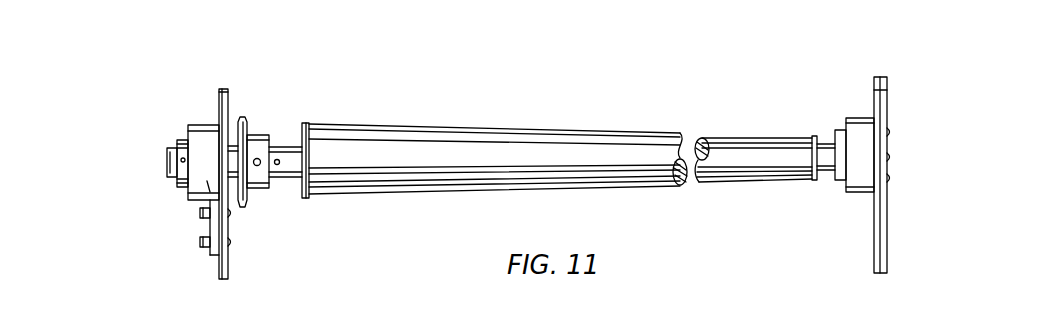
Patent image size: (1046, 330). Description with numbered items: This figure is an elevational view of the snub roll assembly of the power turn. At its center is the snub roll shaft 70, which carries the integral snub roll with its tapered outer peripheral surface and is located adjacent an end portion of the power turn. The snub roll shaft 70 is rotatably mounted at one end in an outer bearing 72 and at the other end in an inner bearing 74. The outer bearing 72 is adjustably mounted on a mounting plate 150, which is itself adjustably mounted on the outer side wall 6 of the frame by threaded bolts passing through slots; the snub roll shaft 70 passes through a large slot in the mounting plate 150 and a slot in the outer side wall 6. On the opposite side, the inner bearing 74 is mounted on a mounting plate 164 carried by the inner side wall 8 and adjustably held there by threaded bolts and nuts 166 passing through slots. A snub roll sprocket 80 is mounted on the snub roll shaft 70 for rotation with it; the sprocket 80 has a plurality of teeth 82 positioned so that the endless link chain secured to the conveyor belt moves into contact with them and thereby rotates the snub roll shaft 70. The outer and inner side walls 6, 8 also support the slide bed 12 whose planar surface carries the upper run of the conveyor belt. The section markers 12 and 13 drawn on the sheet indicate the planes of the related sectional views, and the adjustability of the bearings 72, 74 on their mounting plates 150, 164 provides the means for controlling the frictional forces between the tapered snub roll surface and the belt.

The outer side wall 6 is at (230, 96).
The inner side wall 8 is at (888, 85).
The slide bed 12 is at (148, 103).
The section line 13- 13 is at (918, 93).
The snub roll shaft 70 is at (175, 178).
The outer bearing 72 is at (196, 139).
The inner bearing 74 is at (858, 118).
The snub roll sprocket 80 is at (245, 199).
The teeth 82 is at (247, 118).
The mounting plate 150 is at (218, 92).
The mounting plate 164 is at (873, 90).
The threaded bolts and nuts 166 is at (890, 132).